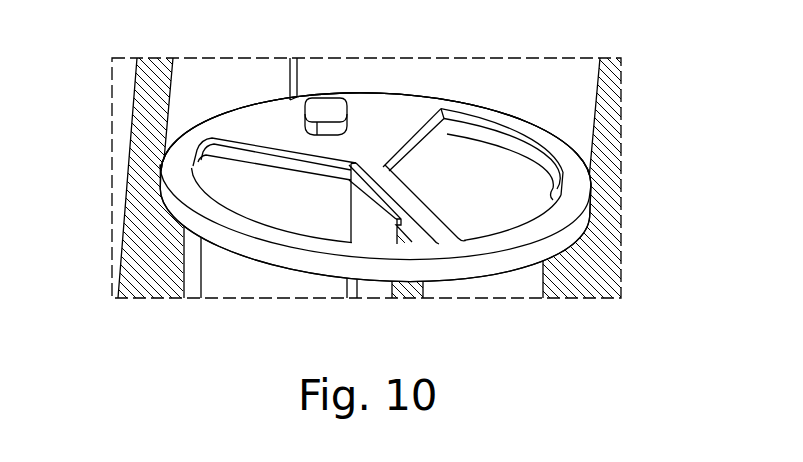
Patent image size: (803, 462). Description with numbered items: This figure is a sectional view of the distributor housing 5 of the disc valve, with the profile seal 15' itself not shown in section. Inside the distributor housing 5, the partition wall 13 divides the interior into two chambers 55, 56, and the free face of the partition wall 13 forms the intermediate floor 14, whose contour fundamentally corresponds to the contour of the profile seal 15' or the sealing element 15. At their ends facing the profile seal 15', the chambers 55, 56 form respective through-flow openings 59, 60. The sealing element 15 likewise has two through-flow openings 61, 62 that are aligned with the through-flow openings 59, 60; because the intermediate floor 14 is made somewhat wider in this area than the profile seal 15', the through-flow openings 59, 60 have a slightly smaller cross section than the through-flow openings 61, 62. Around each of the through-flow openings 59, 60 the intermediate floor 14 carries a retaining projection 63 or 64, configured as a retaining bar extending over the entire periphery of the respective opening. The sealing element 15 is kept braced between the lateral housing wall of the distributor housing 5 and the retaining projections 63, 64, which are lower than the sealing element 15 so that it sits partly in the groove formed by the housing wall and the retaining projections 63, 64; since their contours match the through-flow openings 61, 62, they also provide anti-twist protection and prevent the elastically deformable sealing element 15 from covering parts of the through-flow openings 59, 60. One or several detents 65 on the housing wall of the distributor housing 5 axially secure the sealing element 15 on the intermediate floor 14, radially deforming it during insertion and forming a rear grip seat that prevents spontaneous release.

The distributor housing 5 is at (604, 92).
The partition wall 13 is at (363, 213).
The intermediate floor 14 is at (464, 151).
The sealing element 15 is at (375, 142).
The profile seal 15' is at (376, 94).
The chamber 55 is at (215, 181).
The chamber 56 is at (537, 186).
The through-flow opening 59 is at (250, 221).
The through-flow opening 60 is at (553, 200).
The through-flow opening 61 is at (206, 139).
The through-flow opening 62 is at (513, 147).
The retaining projection 63 is at (225, 158).
The retaining projection 64 is at (478, 142).
The detent 65 is at (299, 58).